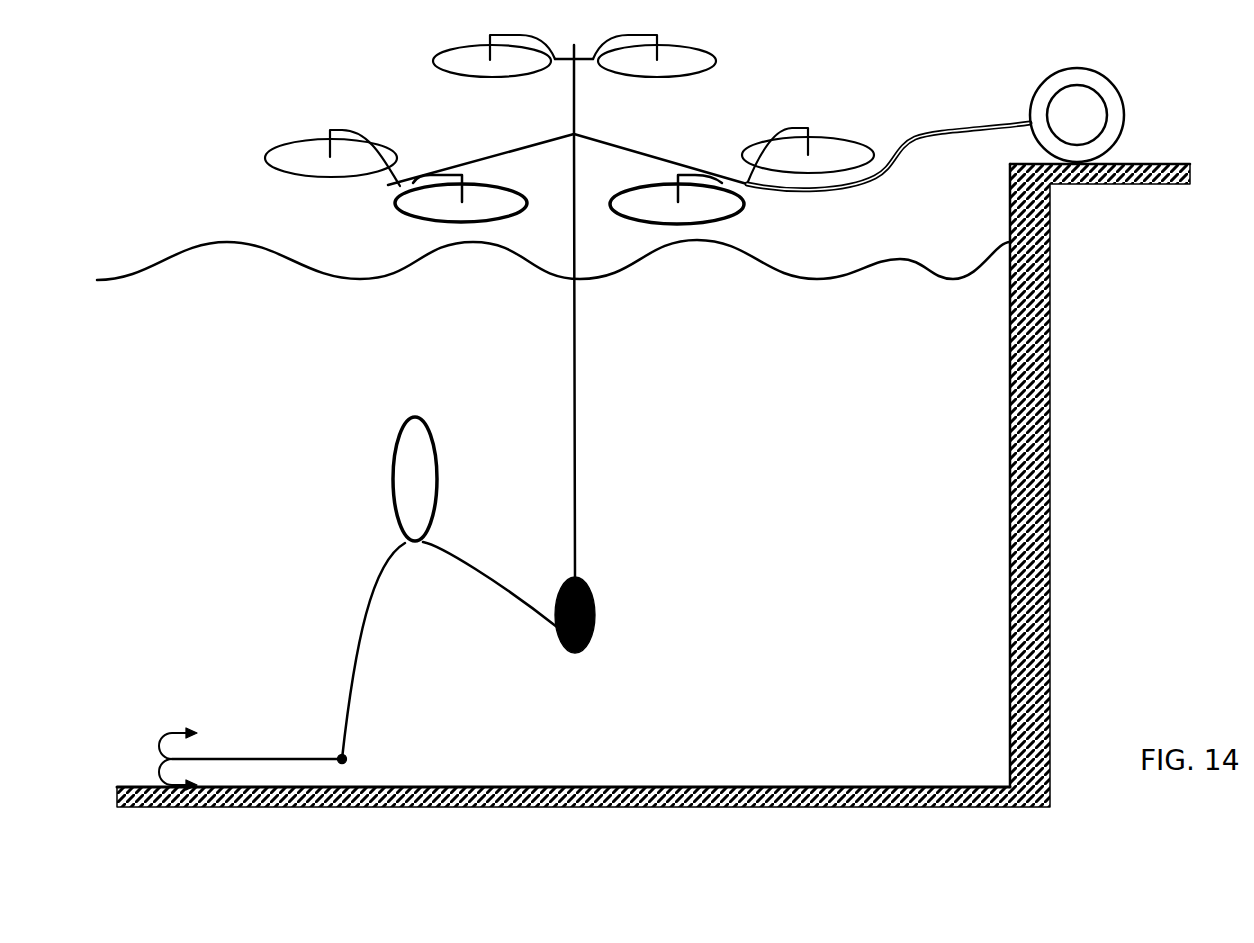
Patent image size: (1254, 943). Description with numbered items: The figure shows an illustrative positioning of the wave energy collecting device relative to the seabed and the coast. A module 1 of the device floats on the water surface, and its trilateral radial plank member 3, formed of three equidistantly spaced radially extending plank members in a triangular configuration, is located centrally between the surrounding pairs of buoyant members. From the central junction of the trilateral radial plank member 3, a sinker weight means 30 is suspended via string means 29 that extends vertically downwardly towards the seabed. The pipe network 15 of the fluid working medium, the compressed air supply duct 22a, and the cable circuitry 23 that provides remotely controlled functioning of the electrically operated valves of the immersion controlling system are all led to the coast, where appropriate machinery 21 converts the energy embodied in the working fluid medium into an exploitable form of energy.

The module 1 is at (528, 129).
The trilateral radial plank member 3 is at (626, 125).
The pipe network 15 is at (888, 230).
The compressed air supply duct 22a is at (888, 230).
The cable circuitry 23 is at (937, 150).
The machinery 21 is at (1120, 61).
The string means 29 is at (575, 453).
The sinker weight means 30 is at (595, 615).